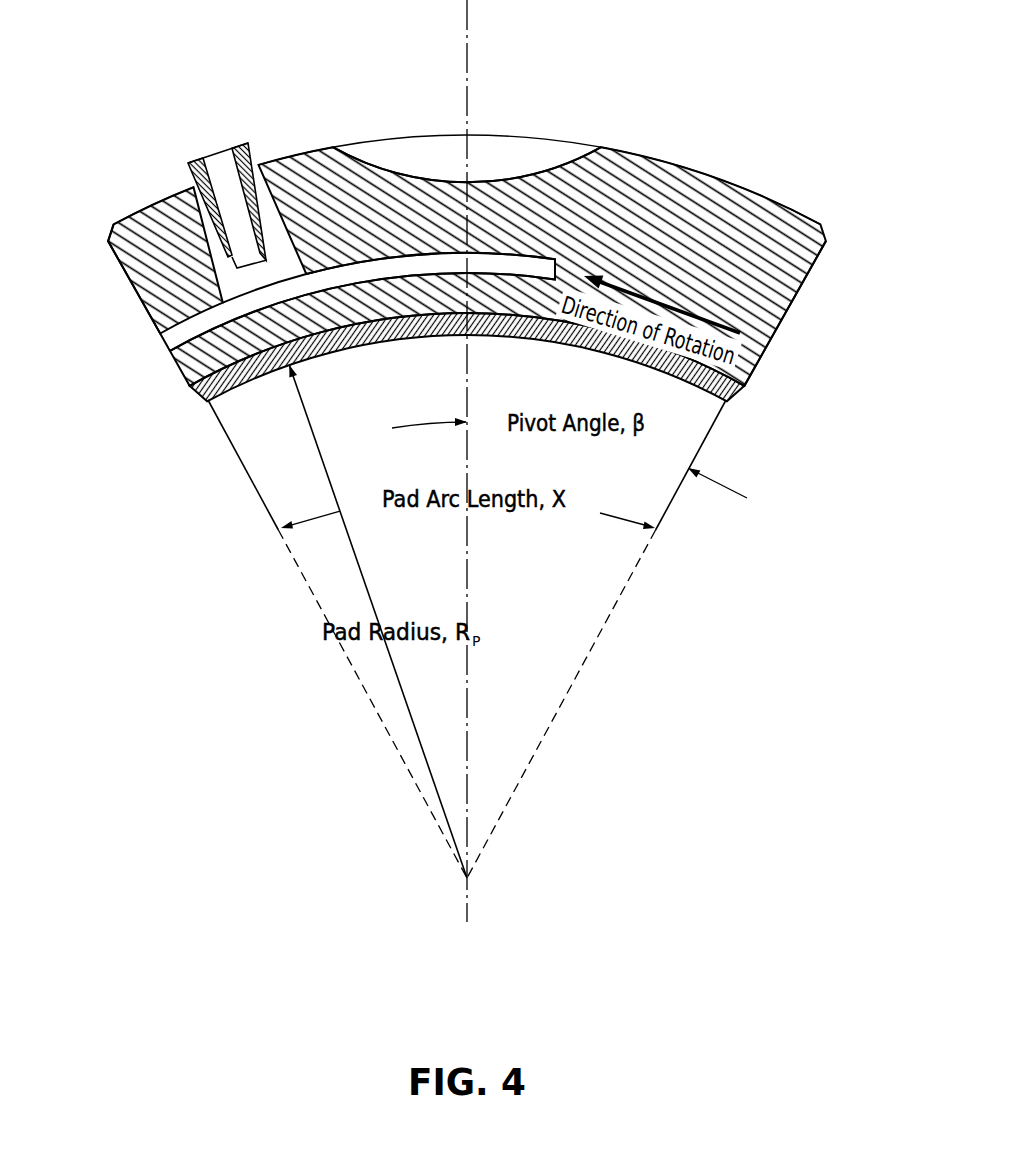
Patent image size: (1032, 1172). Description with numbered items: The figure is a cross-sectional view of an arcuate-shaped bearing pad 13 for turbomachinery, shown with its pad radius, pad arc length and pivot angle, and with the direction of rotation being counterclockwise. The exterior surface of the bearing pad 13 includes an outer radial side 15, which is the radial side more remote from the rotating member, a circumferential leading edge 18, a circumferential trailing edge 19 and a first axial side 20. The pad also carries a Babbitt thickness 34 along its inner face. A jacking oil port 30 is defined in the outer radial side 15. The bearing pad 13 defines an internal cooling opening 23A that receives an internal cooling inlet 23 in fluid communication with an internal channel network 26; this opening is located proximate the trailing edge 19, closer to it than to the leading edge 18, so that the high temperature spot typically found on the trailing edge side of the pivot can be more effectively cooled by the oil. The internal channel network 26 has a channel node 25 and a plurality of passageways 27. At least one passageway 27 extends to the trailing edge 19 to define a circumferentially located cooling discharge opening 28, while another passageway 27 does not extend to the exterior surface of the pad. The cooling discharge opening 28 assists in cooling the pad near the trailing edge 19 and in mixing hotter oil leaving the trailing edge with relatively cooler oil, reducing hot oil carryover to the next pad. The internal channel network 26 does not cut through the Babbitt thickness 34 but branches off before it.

The bearing pad 13 is at (476, 282).
The outer radial side 15 is at (680, 165).
The circumferential leading edge 18 is at (806, 282).
The circumferential trailing edge 19 is at (122, 268).
The first axial side 20 is at (793, 234).
The internal cooling inlet 23 is at (238, 147).
The internal cooling opening 23A is at (257, 167).
The channel node 25 is at (260, 297).
The internal channel network 26 is at (196, 212).
The passageway 27 is at (194, 324).
The cooling discharge opening 28 is at (167, 336).
The jacking oil port 30 is at (510, 172).
The Babbitt thickness 34 is at (727, 403).